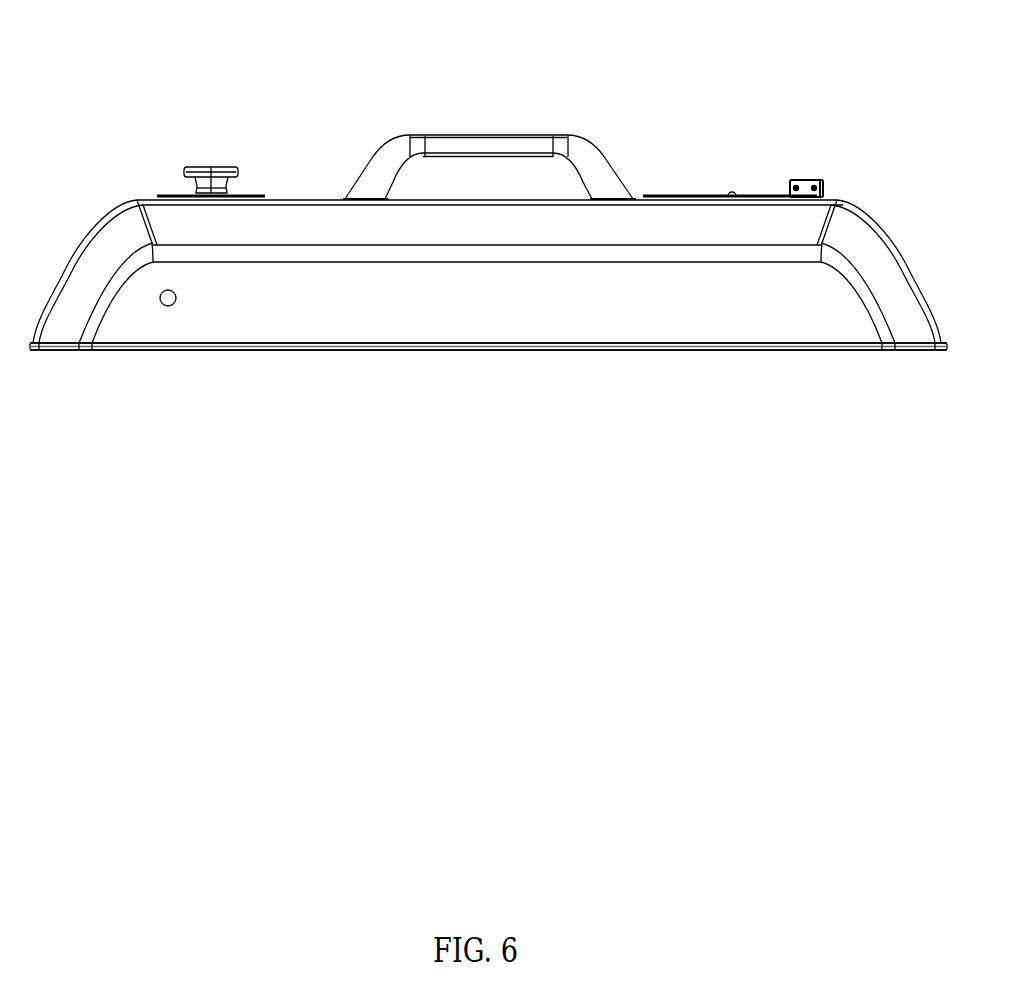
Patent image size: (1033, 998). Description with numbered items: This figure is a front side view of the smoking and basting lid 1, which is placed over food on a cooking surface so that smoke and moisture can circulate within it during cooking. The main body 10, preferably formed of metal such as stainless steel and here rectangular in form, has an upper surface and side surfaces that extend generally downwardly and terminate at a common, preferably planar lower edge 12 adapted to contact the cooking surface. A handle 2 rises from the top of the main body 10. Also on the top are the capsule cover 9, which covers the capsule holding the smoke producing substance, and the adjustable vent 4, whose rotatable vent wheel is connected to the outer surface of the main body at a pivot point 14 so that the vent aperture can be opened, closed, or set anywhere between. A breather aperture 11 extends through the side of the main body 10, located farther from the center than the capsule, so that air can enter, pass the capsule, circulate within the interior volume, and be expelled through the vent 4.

The smoking and basting lid 1 is at (760, 325).
The handle 2 is at (493, 117).
The adjustable vent 4 is at (791, 163).
The capsule cover 9 is at (173, 180).
The main body 10 is at (520, 375).
The breather aperture 11 is at (160, 322).
The lower edge 12 is at (311, 363).
The pivot point 14 is at (722, 180).